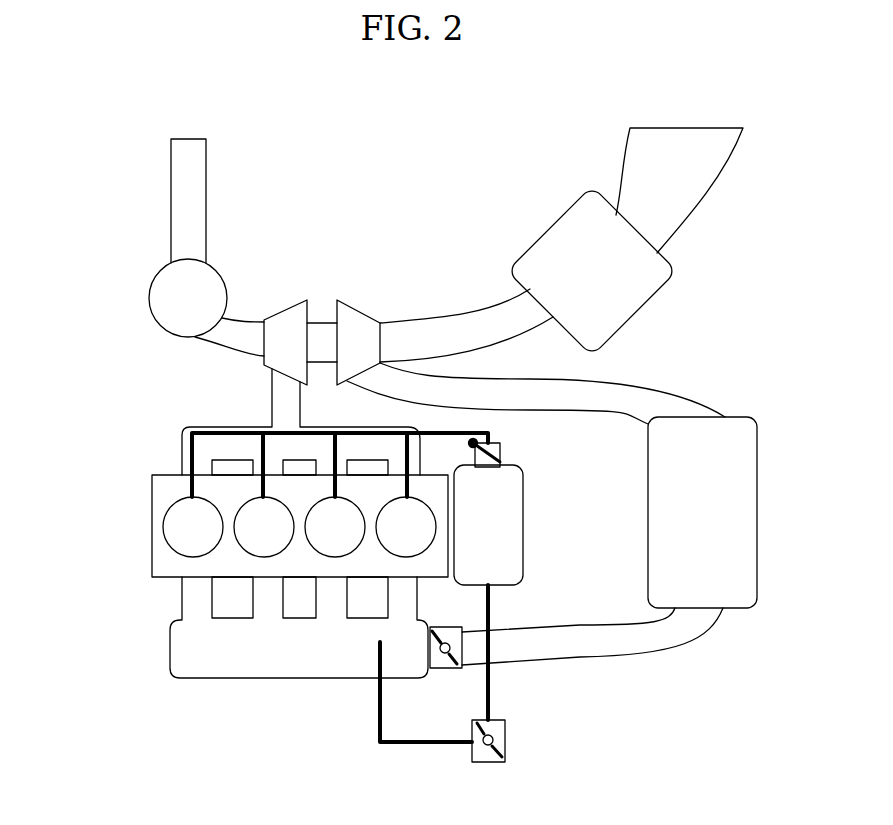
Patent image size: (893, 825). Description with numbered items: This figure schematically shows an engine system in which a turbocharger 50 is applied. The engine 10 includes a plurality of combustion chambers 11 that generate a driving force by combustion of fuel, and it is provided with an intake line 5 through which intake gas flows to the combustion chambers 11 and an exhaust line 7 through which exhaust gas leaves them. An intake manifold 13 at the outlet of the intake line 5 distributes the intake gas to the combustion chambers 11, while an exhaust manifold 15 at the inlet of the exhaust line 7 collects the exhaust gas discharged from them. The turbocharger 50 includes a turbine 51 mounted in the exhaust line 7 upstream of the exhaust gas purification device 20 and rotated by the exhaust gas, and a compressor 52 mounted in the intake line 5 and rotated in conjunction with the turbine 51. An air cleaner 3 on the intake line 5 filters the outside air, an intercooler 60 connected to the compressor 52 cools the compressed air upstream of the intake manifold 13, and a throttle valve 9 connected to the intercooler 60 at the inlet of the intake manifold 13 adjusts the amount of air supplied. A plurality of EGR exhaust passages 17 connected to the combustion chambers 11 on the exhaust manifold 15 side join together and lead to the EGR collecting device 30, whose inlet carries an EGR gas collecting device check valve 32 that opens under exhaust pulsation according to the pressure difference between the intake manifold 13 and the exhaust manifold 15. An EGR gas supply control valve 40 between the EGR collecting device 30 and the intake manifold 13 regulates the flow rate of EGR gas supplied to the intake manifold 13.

The exhaust line 7 is at (171, 197).
The exhaust gas purification device 20 is at (149, 298).
The turbocharger 50 is at (328, 293).
The turbine 51 is at (298, 310).
The compressor 52 is at (362, 308).
The air cleaner 3 is at (673, 270).
The intake line 5 is at (656, 381).
The intercooler 60 is at (648, 512).
The exhaust manifold 15 is at (182, 440).
The EGR exhaust passages 17 is at (215, 432).
The engine 10 is at (117, 475).
The combustion chambers 11 is at (163, 523).
The intake manifold 13 is at (297, 680).
The throttle valve 9 is at (445, 670).
The EGR gas collecting device check valve 32 is at (505, 450).
The EGR collecting device 30 is at (523, 522).
The EGR gas supply control valve 40 is at (508, 740).